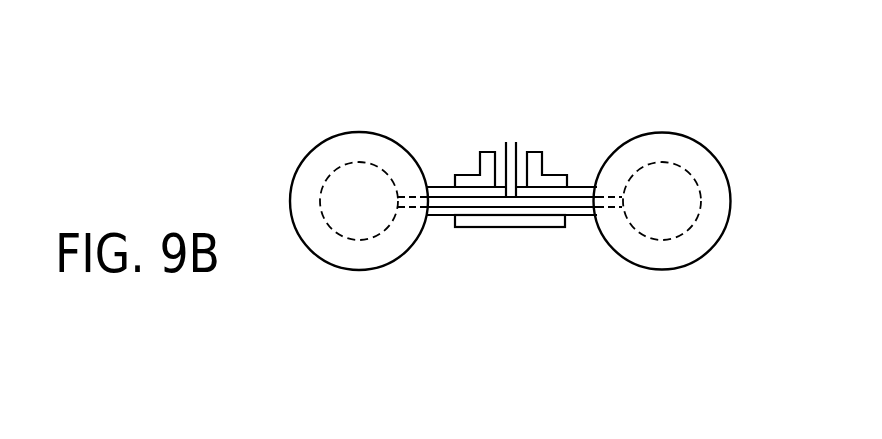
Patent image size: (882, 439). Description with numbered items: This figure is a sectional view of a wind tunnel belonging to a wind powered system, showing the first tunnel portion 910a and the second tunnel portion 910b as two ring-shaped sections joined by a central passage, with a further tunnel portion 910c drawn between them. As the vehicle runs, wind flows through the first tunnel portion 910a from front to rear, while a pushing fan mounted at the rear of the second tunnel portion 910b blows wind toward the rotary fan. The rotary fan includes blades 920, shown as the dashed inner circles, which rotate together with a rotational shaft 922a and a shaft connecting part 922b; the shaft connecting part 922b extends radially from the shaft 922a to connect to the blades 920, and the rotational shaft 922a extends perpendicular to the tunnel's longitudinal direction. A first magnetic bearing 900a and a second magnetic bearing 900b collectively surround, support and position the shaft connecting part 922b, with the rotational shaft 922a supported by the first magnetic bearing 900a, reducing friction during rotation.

The first tunnel portion 910a is at (311, 150).
The second tunnel portion 910b is at (730, 202).
The first connector terminal 910c is at (440, 187).
The blades 920 is at (354, 162).
The rotational shaft 922a is at (504, 148).
The shaft connecting part 922b is at (447, 208).
The first magnetic bearing 900a is at (542, 150).
The second magnetic bearing 900b is at (540, 228).